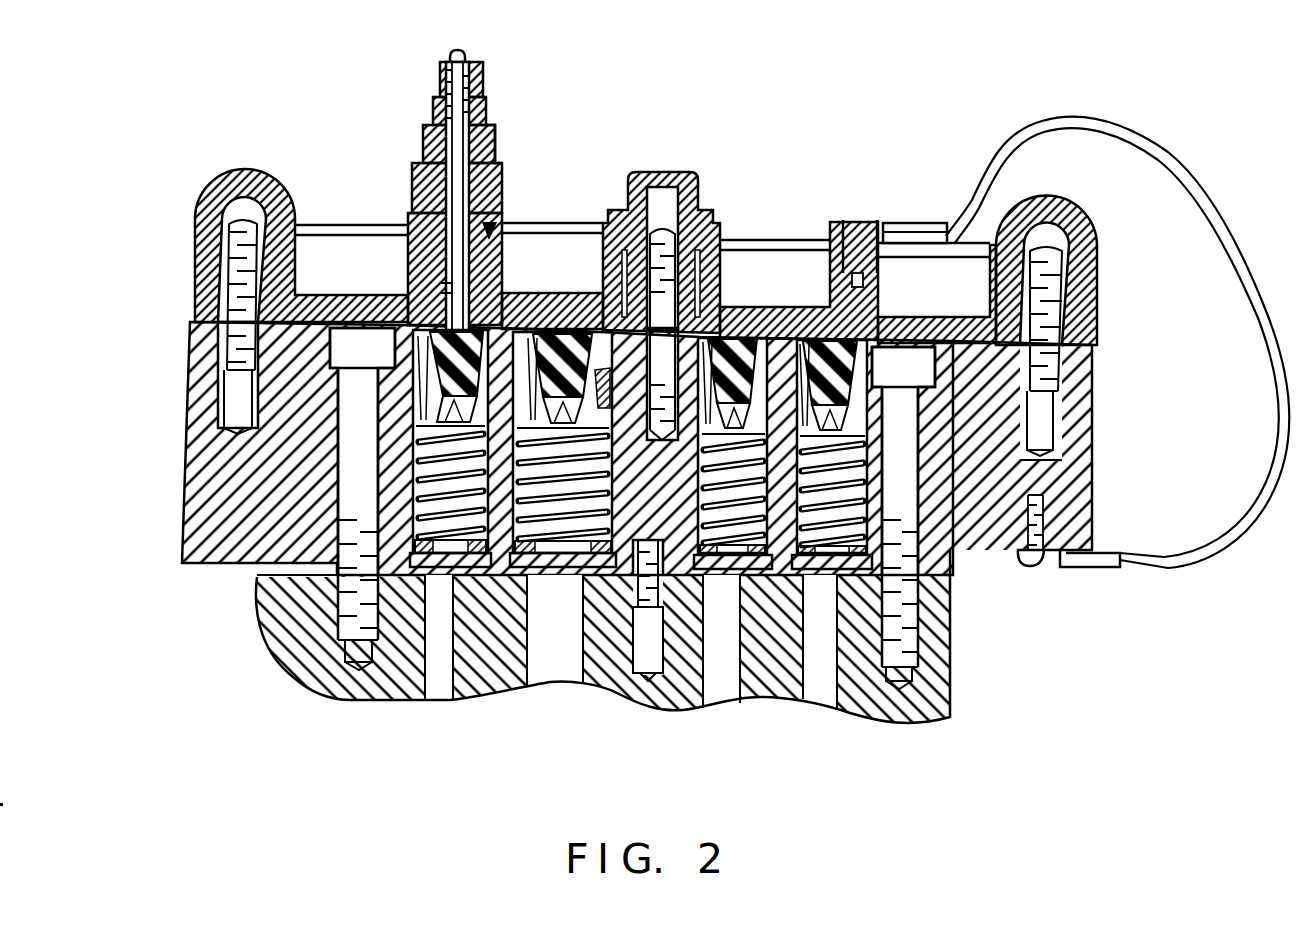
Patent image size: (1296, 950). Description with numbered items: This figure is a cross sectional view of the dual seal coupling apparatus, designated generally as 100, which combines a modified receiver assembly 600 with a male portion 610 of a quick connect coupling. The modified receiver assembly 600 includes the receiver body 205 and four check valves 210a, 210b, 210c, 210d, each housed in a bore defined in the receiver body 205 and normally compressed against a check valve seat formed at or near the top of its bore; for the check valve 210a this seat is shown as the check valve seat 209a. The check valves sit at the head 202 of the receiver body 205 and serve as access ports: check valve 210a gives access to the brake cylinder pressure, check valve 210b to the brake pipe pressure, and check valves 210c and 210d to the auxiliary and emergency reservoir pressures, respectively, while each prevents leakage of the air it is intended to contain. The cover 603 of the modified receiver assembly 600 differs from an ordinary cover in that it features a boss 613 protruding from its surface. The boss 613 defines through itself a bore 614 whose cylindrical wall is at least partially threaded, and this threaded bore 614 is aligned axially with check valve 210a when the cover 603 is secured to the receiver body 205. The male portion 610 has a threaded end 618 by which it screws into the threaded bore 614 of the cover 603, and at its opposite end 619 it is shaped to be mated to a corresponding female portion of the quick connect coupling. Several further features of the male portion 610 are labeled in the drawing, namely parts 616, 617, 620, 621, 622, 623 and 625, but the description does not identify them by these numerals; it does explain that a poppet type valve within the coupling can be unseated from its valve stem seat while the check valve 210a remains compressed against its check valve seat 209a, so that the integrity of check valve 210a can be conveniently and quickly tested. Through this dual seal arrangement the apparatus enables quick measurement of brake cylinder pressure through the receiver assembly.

The valve assembly 100 is at (298, 122).
The head 202 is at (638, 257).
The receiver body 205 is at (1071, 464).
The check valve seat 209a is at (420, 405).
The check valve 210a is at (425, 432).
The check valve 210b is at (567, 300).
The check valve 210c is at (740, 313).
The check valve 210d is at (912, 320).
The modified receiver assembly 600 is at (158, 389).
The cover 603 is at (197, 247).
The male portion 610 is at (503, 187).
The boss 613 is at (410, 223).
The bore 614 is at (443, 287).
The stem housing section 616 is at (412, 184).
The adjusting nut 617 is at (423, 150).
The threaded end 618 is at (500, 223).
The opposite end 619 is at (440, 78).
The threaded stem portion 620 is at (482, 83).
The stem tip 621 is at (458, 62).
The lock nut 622 is at (487, 102).
The shoulder 623 is at (495, 160).
The stem end 625 is at (452, 54).